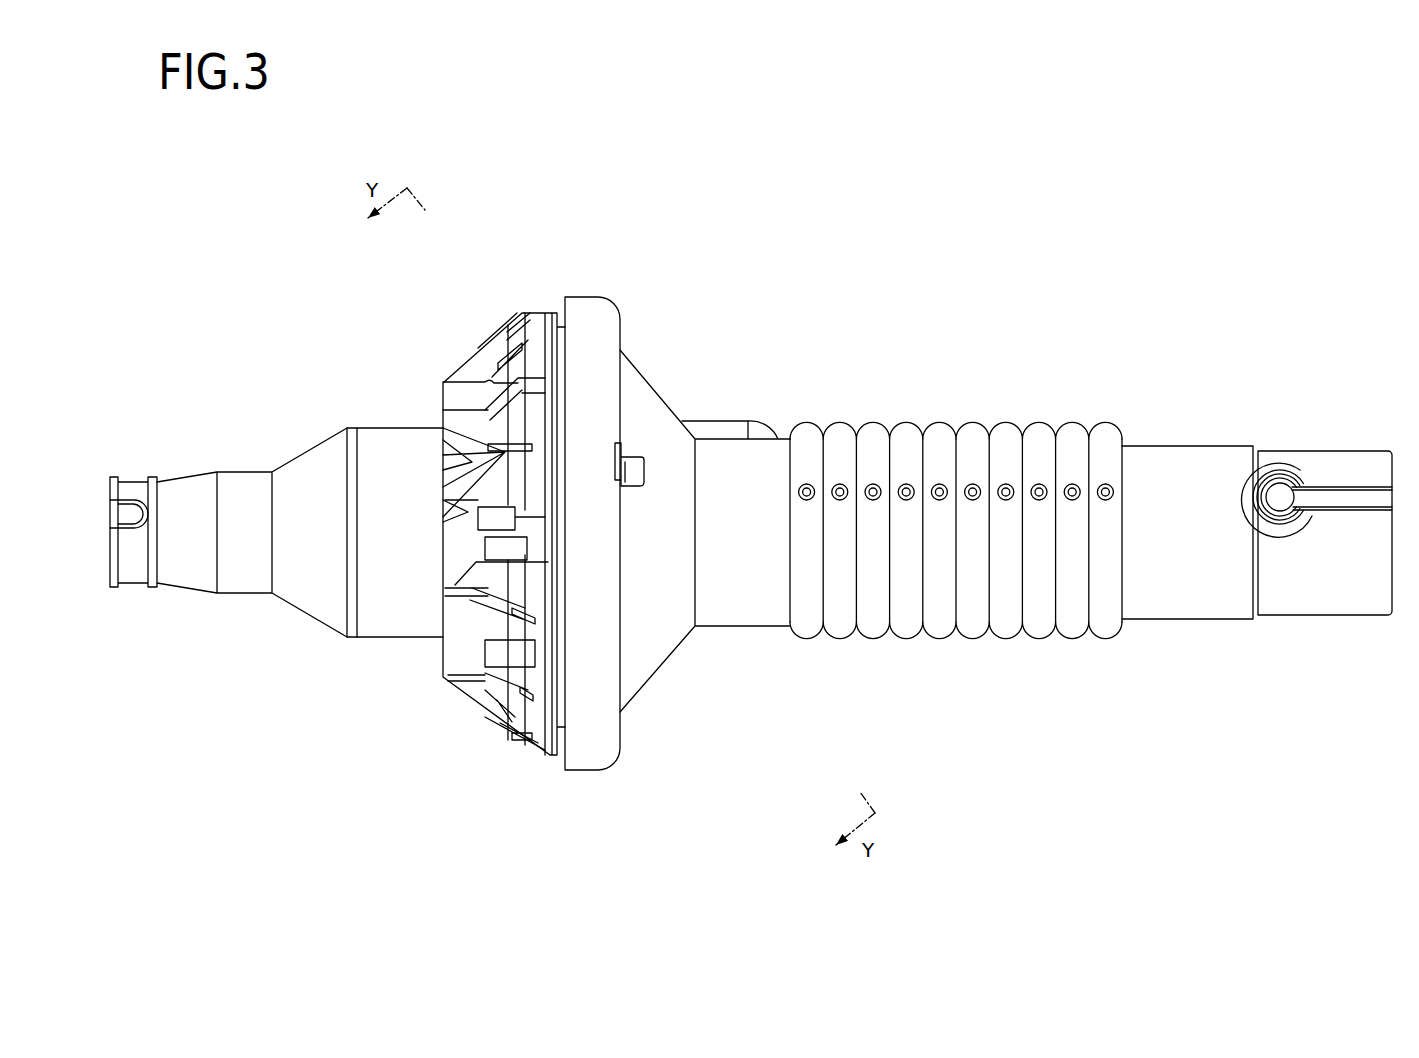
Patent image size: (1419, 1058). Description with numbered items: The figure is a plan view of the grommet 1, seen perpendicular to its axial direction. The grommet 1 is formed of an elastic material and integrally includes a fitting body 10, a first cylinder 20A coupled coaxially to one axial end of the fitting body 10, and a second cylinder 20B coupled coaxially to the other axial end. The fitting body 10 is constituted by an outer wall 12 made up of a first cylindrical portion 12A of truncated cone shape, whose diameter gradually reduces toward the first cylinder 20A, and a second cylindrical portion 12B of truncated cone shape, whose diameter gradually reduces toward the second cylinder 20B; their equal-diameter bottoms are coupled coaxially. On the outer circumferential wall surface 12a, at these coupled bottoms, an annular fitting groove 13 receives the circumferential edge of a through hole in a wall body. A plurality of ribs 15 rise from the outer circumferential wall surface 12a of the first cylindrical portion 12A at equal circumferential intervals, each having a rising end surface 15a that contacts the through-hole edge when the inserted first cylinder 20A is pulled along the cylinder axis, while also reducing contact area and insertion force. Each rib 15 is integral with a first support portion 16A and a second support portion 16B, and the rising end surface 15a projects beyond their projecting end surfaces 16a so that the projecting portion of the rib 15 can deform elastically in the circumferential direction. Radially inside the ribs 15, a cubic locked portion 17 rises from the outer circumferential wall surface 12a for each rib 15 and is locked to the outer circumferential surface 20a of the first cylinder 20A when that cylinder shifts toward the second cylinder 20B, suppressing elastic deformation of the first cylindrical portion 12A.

The grommet 1 is at (733, 112).
The fitting body 10 is at (470, 162).
The outer wall 12 is at (665, 533).
The outer circumferential wall surface 12a is at (540, 765).
The first cylindrical portion 12A is at (537, 297).
The second cylindrical portion 12B is at (682, 404).
The fitting groove 13 is at (560, 323).
The rib 15 is at (710, 533).
The rising end surface 15a is at (493, 330).
The projecting end surface 16a is at (491, 335).
The first support portion 16A is at (516, 669).
The second support portion 16B is at (511, 471).
The locked portion 17 is at (458, 373).
The first cylinder 20A is at (271, 452).
The outer circumferential surface 20a is at (388, 425).
The second cylinder 20B is at (981, 407).